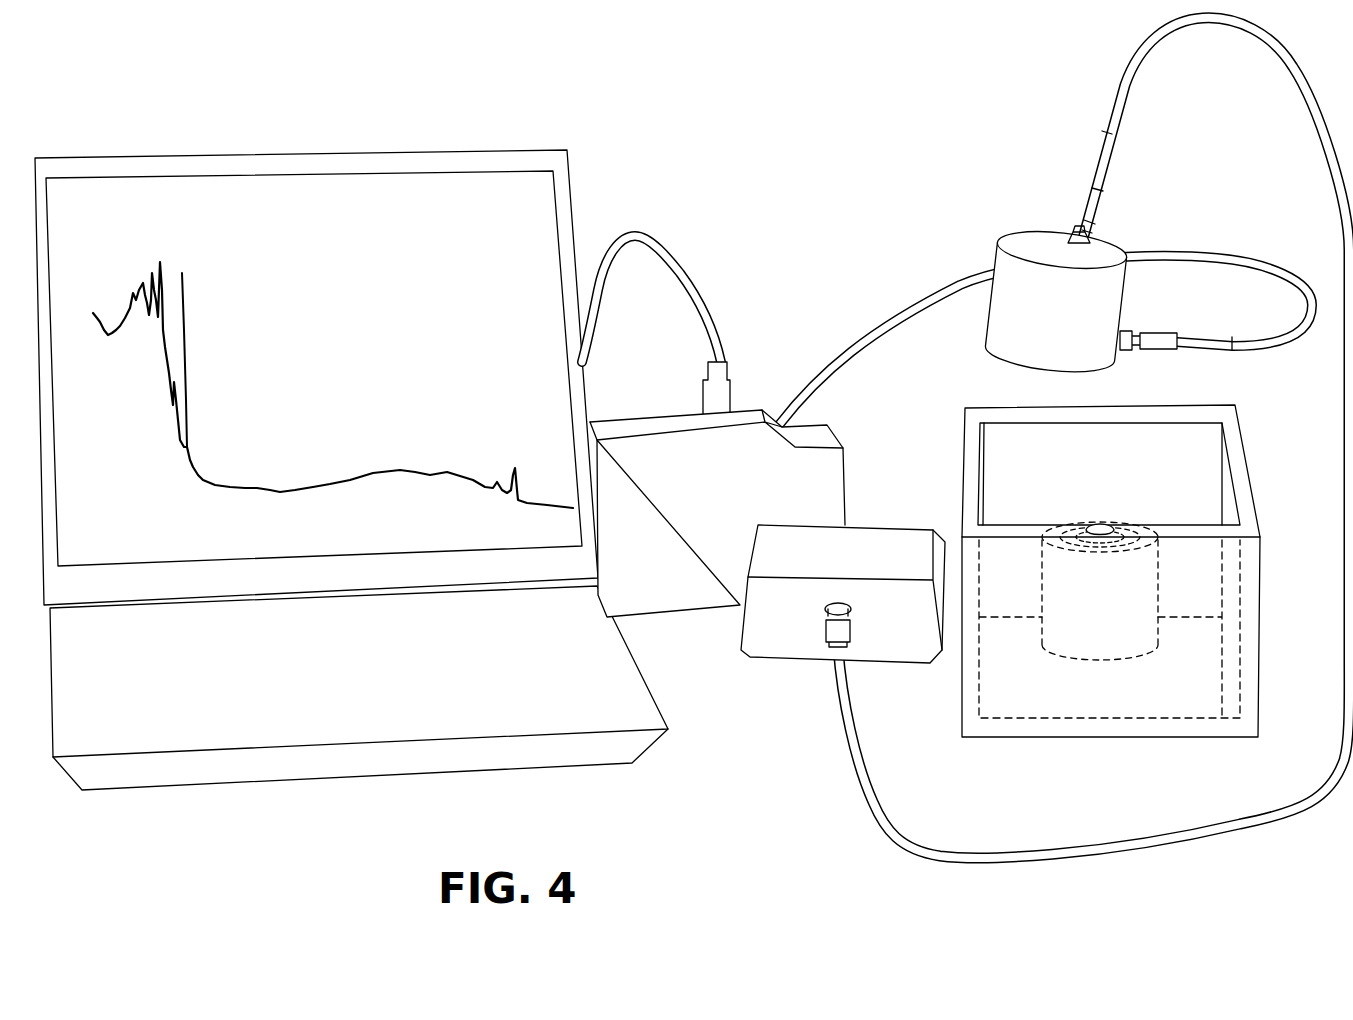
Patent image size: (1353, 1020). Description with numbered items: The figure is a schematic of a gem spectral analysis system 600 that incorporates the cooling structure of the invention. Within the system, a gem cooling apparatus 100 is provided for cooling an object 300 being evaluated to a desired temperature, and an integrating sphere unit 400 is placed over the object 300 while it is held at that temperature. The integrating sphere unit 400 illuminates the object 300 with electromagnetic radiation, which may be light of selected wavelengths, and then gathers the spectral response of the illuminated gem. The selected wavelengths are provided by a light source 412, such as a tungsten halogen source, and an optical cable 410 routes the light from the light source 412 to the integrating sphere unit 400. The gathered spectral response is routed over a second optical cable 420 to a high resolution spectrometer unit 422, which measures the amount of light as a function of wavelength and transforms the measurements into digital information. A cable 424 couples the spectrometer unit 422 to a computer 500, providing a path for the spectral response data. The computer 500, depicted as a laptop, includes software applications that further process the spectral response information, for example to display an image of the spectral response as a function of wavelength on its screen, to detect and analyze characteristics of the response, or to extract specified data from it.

The gem spectral analysis system 600 is at (639, 145).
The computer 500 is at (399, 668).
The cable 424 is at (698, 292).
The high resolution spectrometer unit 422 is at (708, 511).
The optical cable 420 is at (1180, 266).
The light source 412 is at (863, 569).
The optical cable 410 is at (882, 810).
The integrating sphere unit 400 is at (1080, 321).
The gem cooling apparatus 100 is at (1252, 495).
The object 300 is at (1105, 521).